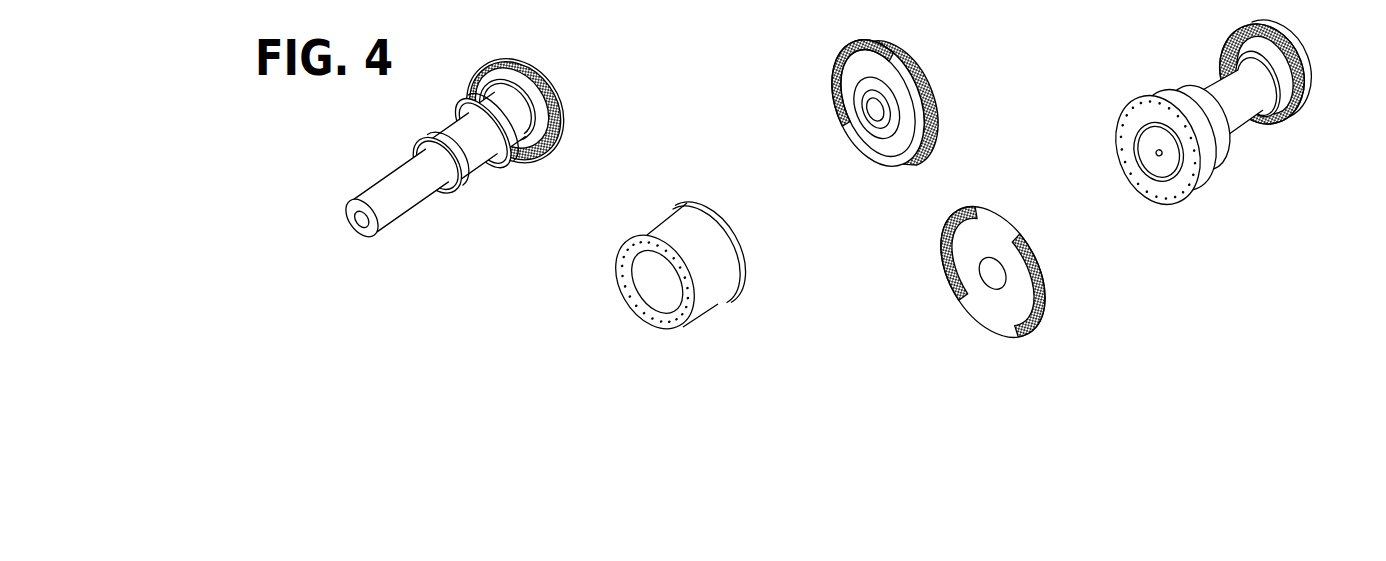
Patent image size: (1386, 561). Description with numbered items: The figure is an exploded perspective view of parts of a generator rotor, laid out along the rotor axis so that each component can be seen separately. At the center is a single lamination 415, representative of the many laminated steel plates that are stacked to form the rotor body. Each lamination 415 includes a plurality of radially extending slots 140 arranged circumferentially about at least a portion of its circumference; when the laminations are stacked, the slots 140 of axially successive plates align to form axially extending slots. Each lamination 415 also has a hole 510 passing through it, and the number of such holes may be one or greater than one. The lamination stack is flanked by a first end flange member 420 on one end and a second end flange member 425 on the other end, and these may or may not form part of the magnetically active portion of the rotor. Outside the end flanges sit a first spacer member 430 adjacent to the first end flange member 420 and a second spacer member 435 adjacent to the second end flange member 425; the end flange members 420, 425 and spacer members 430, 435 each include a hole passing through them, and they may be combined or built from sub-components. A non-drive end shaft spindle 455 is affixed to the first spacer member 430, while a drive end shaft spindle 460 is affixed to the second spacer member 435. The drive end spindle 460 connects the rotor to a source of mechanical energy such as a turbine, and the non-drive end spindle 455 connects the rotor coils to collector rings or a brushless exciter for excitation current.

The non-drive end shaft spindle 455 is at (437, 185).
The first spacer member 430 is at (721, 253).
The second spacer member 435 is at (723, 288).
The first end flange member 420 is at (877, 68).
The second end flange member 425 is at (929, 93).
The radially extending slots 140 is at (970, 282).
The lamination 415 is at (1007, 241).
The hole 510 is at (995, 277).
The drive end shaft spindle 460 is at (1253, 100).